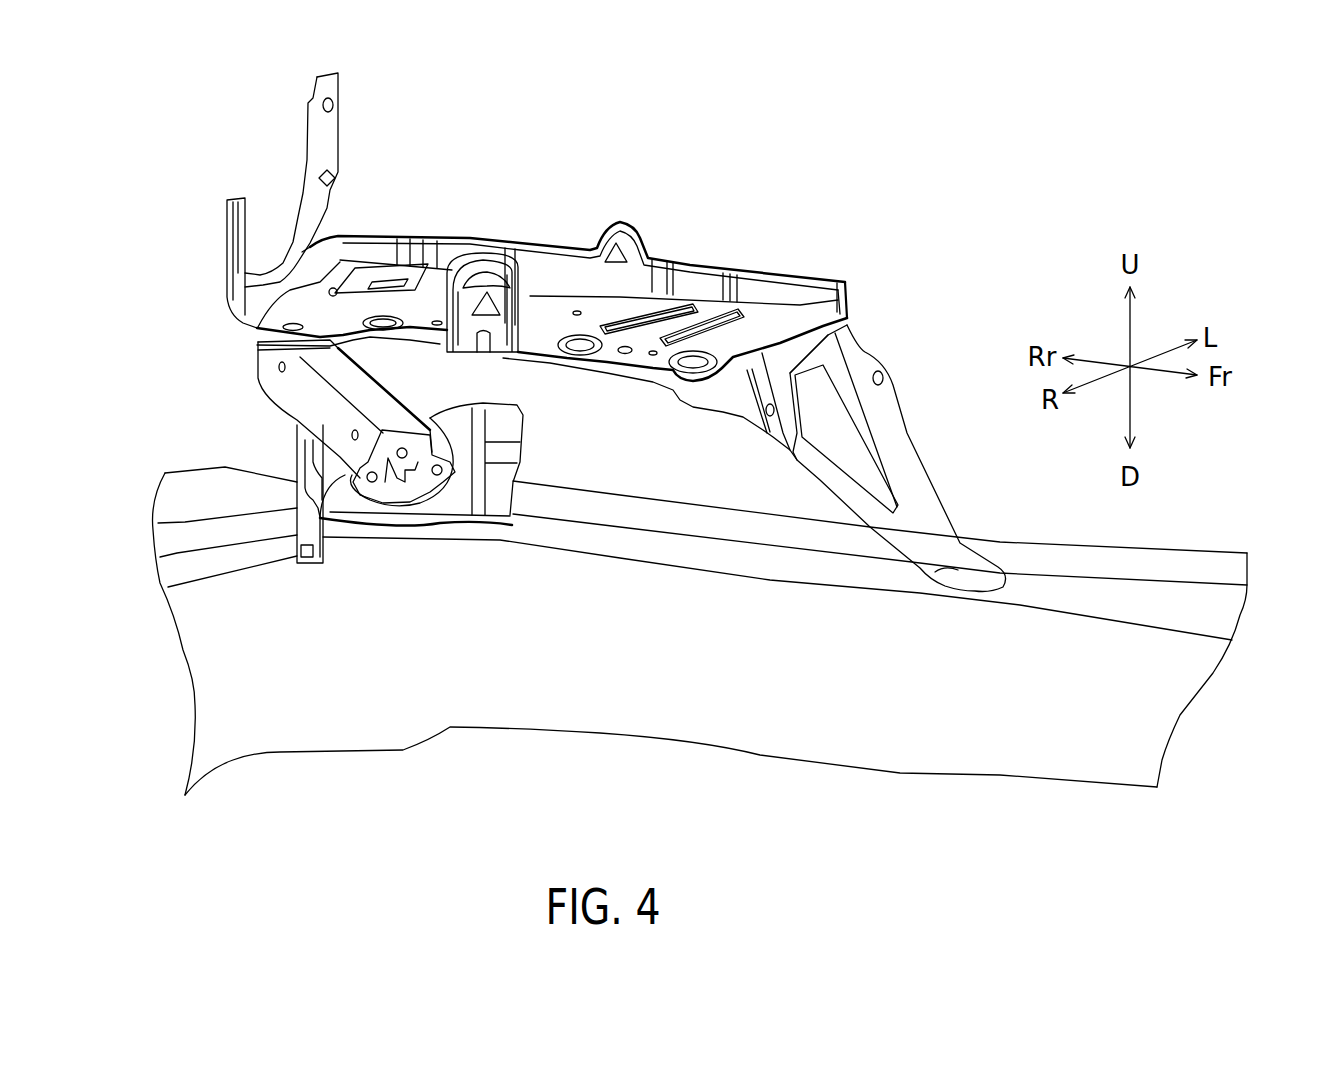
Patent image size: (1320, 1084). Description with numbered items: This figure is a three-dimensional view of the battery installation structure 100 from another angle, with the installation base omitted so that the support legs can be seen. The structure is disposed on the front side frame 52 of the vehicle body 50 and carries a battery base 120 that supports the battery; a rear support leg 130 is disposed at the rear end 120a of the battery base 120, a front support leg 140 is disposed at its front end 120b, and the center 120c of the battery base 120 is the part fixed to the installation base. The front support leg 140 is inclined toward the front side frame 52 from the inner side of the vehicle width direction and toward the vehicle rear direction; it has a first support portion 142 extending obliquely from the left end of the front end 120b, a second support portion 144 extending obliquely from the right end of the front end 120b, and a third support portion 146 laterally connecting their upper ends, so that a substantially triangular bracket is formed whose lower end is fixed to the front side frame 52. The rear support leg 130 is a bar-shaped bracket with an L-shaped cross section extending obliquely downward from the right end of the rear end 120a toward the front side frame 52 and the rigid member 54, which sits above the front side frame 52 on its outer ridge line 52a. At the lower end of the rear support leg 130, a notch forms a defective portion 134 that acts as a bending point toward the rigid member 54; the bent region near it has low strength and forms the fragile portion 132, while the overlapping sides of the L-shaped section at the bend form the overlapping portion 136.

The vehicle body 50 is at (700, 624).
The front side frame 52 is at (395, 710).
The ridge line 52a is at (343, 548).
The rigid member 54 is at (427, 513).
The battery installation structure 100 is at (593, 348).
The battery base 120 is at (555, 261).
The rear end 120a is at (364, 255).
The front end 120b is at (827, 274).
The center 120c is at (531, 254).
The rear support leg 130 is at (350, 481).
The fragile portion 132 is at (387, 465).
The defective portion 134 is at (333, 524).
The overlapping portion 136 is at (500, 520).
The front support leg 140 is at (877, 438).
The first support portion 142 is at (901, 423).
The second support portion 144 is at (850, 490).
The third support portion 146 is at (813, 353).